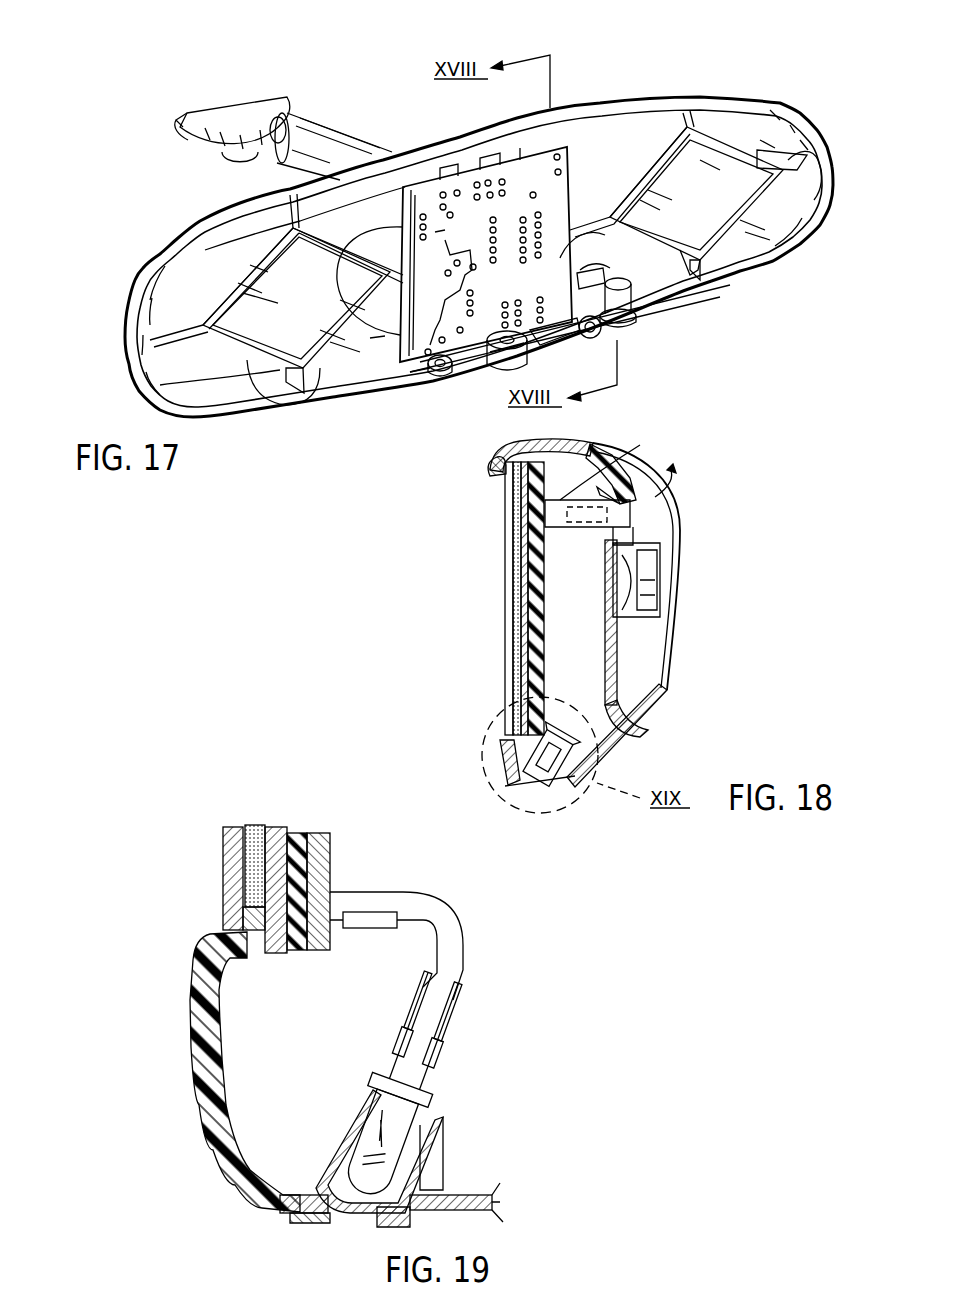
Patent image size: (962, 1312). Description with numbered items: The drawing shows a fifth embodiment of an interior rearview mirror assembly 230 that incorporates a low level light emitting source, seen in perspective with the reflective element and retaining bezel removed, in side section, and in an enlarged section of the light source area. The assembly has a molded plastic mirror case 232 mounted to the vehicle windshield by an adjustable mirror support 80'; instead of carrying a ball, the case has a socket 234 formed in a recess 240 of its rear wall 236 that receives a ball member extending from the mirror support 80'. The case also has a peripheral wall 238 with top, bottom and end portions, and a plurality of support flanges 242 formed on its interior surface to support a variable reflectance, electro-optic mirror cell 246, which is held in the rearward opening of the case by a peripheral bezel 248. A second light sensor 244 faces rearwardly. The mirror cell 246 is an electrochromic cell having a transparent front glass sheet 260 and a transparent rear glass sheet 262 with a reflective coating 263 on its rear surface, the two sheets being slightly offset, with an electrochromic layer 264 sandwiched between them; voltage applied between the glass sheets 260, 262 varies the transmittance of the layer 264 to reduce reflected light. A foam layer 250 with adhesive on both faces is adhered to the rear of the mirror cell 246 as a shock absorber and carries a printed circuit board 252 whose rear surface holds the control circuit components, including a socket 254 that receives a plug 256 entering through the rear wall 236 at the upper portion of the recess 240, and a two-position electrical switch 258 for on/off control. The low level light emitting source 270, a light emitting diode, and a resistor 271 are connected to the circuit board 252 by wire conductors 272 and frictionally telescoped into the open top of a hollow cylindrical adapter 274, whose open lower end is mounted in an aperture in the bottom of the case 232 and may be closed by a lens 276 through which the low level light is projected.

In FIG. 17, the adjustable mirror support 80' is at (283, 116).
In FIG. 17, the interior rearview mirror assembly 230 is at (748, 64).
In FIG. 18, the interior rearview mirror assembly 230 is at (776, 484).
In FIG. 17, the mirror case 232 is at (627, 104).
In FIG. 18, the mirror case 232 is at (652, 458).
In FIG. 18, the socket 234 is at (665, 590).
In FIG. 18, the rear wall 236 is at (640, 732).
In FIG. 17, the peripheral wall 238 is at (455, 145).
In FIG. 18, the peripheral wall 238 is at (578, 465).
In FIG. 19, the peripheral wall 238 is at (462, 1197).
In FIG. 18, the recess 240 is at (622, 643).
In FIG. 17, the support flanges 242 is at (745, 228).
In FIG. 17, the second light sensor 244 is at (417, 385).
In FIG. 18, the electro-optic mirror cell 246 is at (589, 597).
In FIG. 19, the electro-optic mirror cell 246 is at (231, 845).
In FIG. 18, the peripheral bezel 248 is at (510, 460).
In FIG. 18, the foam layer 250 is at (527, 617).
In FIG. 19, the foam layer 250 is at (292, 832).
In FIG. 17, the printed circuit board 252 is at (400, 342).
In FIG. 18, the printed circuit board 252 is at (540, 653).
In FIG. 19, the printed circuit board 252 is at (348, 874).
In FIG. 18, the socket 254 is at (560, 505).
In FIG. 18, the plug 256 is at (633, 527).
In FIG. 17, the two-position electrical switch 258 is at (500, 374).
In FIG. 19, the front glass sheet 260 is at (230, 870).
In FIG. 19, the rear glass sheet 262 is at (272, 900).
In FIG. 19, the reflective coating 263 is at (256, 828).
In FIG. 19, the electrochromic layer 264 is at (268, 830).
In FIG. 17, the low level light emitting source 270 is at (642, 292).
In FIG. 18, the low level light emitting source 270 is at (544, 786).
In FIG. 19, the low level light emitting source 270 is at (443, 1098).
In FIG. 19, the resistor 271 is at (368, 918).
In FIG. 19, the wire conductors 272 is at (440, 945).
In FIG. 19, the cylindrical adapter 274 is at (334, 1143).
In FIG. 19, the lens 276 is at (350, 1213).